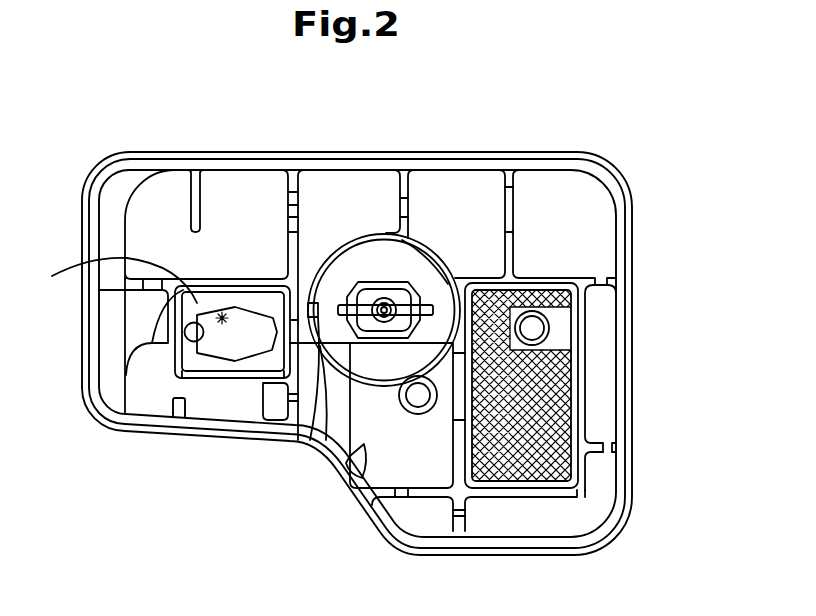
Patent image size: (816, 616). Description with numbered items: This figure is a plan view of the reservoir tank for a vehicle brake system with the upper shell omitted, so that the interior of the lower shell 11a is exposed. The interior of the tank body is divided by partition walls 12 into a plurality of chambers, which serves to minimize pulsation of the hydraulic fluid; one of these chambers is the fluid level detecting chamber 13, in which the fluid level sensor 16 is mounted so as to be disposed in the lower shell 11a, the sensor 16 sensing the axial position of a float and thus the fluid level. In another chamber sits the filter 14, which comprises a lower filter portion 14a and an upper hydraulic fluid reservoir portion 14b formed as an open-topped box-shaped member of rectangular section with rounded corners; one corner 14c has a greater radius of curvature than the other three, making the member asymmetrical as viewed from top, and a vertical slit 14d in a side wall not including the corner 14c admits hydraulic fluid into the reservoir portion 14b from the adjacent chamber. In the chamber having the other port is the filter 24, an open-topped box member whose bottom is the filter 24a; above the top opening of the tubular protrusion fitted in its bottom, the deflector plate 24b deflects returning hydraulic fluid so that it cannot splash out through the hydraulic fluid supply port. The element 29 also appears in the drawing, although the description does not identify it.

The lower shell 11a is at (633, 272).
The partition walls 12 is at (290, 243).
The fluid level detecting chamber 13 is at (383, 258).
The filter 14 is at (109, 336).
The lower filter portion 14a is at (223, 345).
The hydraulic fluid reservoir portion 14b is at (275, 374).
The corner 14c is at (177, 378).
The vertical slit 14d is at (283, 343).
The fluid level sensor 16 is at (381, 305).
The filter 24 is at (557, 433).
The filter 24a is at (577, 493).
The deflector plate 24b is at (533, 328).
The hook member 29 is at (310, 440).